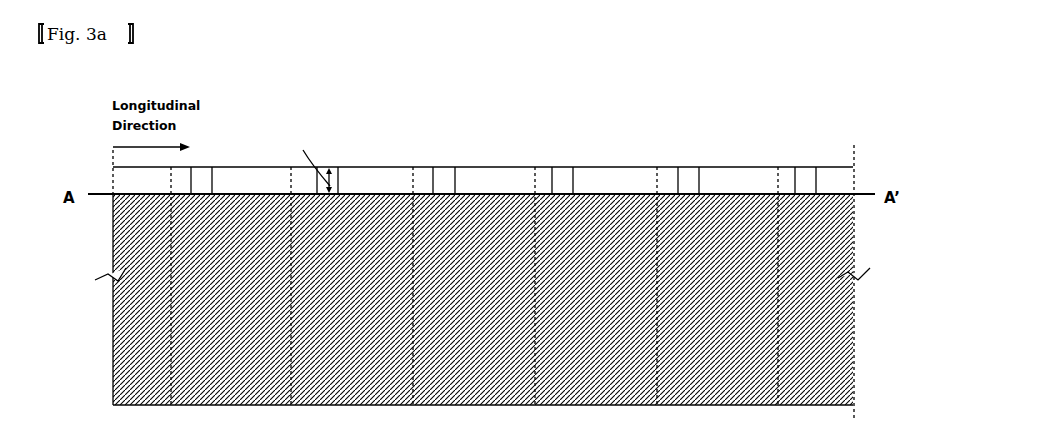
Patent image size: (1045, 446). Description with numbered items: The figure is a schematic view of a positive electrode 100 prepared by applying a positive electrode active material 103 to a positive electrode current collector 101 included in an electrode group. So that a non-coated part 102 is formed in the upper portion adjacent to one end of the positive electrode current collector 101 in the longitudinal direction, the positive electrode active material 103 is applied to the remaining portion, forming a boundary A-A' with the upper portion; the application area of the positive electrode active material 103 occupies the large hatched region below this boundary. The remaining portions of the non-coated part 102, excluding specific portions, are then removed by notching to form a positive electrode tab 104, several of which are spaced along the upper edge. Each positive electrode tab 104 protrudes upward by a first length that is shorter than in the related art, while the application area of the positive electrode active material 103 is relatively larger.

The positive electrode 100 is at (485, 258).
The positive electrode current collector 101 is at (497, 165).
The non-coated part 102 is at (630, 175).
The positive electrode active material 103 is at (828, 334).
The positive electrode tab 104 is at (445, 173).